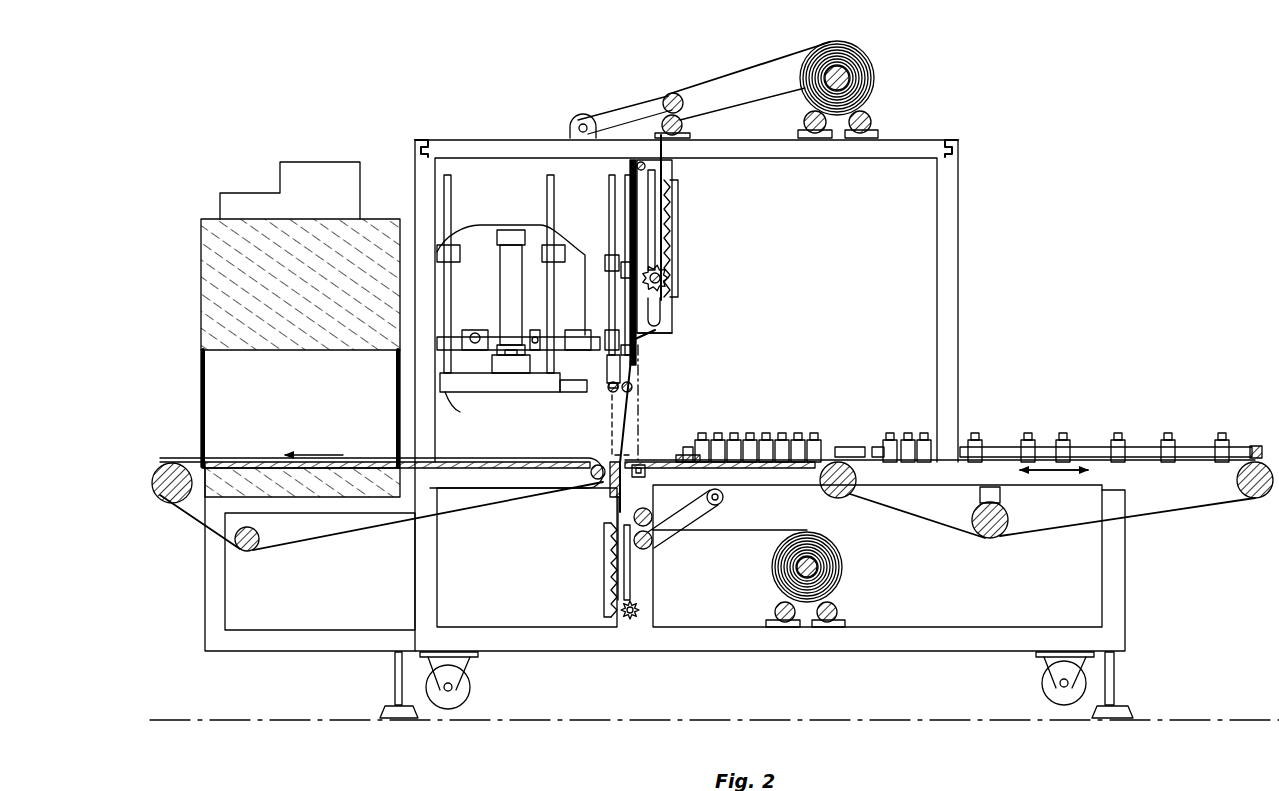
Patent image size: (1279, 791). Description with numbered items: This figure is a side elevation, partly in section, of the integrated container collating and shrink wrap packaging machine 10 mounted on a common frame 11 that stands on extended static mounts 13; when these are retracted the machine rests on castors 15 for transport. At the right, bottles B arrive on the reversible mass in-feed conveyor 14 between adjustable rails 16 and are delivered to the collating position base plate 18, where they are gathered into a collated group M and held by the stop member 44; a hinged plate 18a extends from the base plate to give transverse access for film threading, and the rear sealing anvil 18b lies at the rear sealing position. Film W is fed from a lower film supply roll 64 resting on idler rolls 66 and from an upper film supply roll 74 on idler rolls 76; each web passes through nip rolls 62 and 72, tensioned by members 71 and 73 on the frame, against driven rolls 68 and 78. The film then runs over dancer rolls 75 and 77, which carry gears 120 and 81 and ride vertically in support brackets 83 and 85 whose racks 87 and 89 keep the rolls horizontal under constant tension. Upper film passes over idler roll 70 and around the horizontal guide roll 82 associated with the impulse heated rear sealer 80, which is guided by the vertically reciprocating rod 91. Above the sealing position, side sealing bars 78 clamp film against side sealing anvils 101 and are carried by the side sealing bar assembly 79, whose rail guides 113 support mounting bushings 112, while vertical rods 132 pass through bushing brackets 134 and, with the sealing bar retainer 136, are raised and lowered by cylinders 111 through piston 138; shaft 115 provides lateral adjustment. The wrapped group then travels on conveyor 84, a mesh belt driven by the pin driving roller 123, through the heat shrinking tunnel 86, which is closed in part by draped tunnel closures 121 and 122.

The integrated machine 10 is at (1098, 238).
The common frame 11 is at (950, 225).
The static mounts 13 is at (395, 680).
The reversible mass in-feed conveyor 14 is at (1155, 470).
The castors 15 is at (470, 688).
The adjustable rails 16 is at (1145, 440).
The collating position base plate 18 is at (790, 470).
The hinged plate 18a is at (640, 463).
The rear sealing anvil 18b is at (608, 480).
The stop member 44 is at (692, 447).
The nip roll 62 is at (633, 515).
The lower film supply roll 64 is at (845, 566).
The idler rolls 66 is at (827, 625).
The drive roll 68 is at (652, 546).
The idler roll 70 is at (665, 170).
The tensioning member 71 is at (722, 508).
The nip roll 72 is at (676, 93).
The tensioning member 73 is at (632, 108).
The upper film supply roll 74 is at (873, 80).
The dancer roll 75 is at (630, 622).
The idler rolls 76 is at (860, 134).
The dancer roll 77 is at (668, 280).
The side sealing bars 78 is at (682, 122).
The side sealing bar assembly 79 is at (498, 228).
The rear sealer 80 is at (608, 386).
The gear 81 is at (640, 612).
The horizontal guide roll 82 is at (632, 390).
The support bracket 83 is at (672, 320).
The conveyor 84 is at (370, 462).
The support bracket 85 is at (624, 530).
The heat shrinking tunnel 86 is at (252, 377).
The rack 87 is at (605, 578).
The rack 89 is at (672, 240).
The vertically reciprocating rod 91 is at (610, 198).
The side sealing anvils 101 is at (485, 458).
The vertically actuable cylinders 111 is at (511, 250).
The mounting bushings 112 is at (477, 332).
The rail guides 113 is at (470, 330).
The shaft 115 is at (535, 330).
The gear 120 is at (650, 333).
The tunnel closure 121 is at (398, 395).
The tunnel closure 122 is at (203, 360).
The pin driving roller 123 is at (252, 550).
The vertical rods 132 is at (447, 195).
The guide bushings 134 is at (449, 250).
The sealing bar retainer 136 is at (490, 375).
The piston 138 is at (535, 375).
The bottles B is at (1068, 443).
The collated group M is at (770, 438).
The film W is at (612, 420).